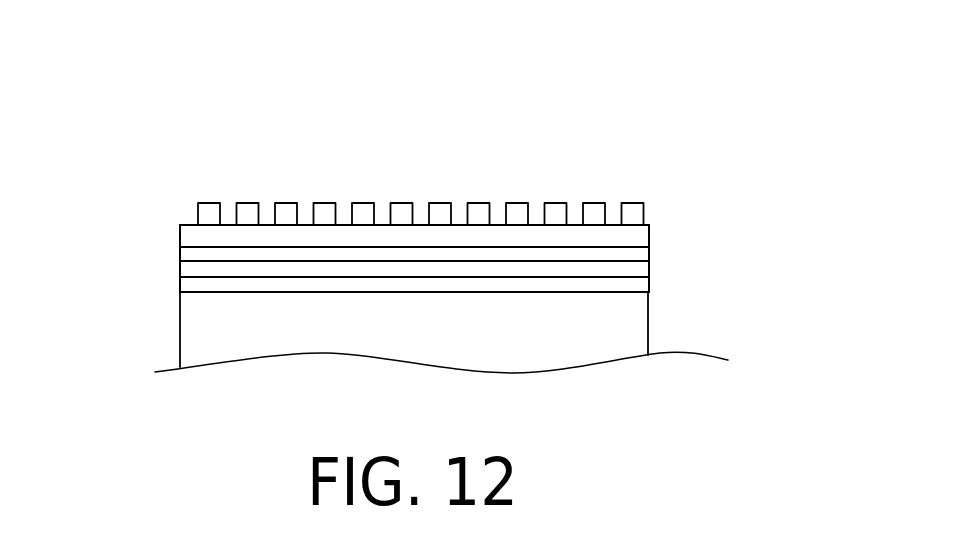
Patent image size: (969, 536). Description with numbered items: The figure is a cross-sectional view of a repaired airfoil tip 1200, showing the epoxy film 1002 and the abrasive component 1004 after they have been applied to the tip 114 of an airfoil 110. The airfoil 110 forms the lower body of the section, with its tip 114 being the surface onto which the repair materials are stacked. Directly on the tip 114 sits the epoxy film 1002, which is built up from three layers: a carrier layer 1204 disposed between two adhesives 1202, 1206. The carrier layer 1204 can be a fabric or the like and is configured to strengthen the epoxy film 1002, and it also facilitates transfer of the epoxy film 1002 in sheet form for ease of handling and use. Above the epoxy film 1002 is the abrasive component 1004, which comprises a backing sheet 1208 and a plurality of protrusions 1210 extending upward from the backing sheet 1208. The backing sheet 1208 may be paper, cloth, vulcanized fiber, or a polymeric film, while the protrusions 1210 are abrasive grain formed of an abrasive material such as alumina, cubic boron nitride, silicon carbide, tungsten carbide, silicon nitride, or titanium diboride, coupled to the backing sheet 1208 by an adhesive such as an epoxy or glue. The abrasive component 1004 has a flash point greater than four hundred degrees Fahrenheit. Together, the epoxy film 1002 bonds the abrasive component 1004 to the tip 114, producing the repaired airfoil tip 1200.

The repaired airfoil tip 1200 is at (588, 88).
The airfoil 110 is at (441, 332).
The tip 114 is at (244, 292).
The adhesive 1202 is at (633, 287).
The carrier layer 1204 is at (648, 267).
The adhesive 1206 is at (648, 253).
The backing sheet 1208 is at (648, 230).
The plurality of protrusions 1210 is at (633, 212).
The abrasive component 1004 is at (152, 224).
The epoxy film 1002 is at (150, 279).